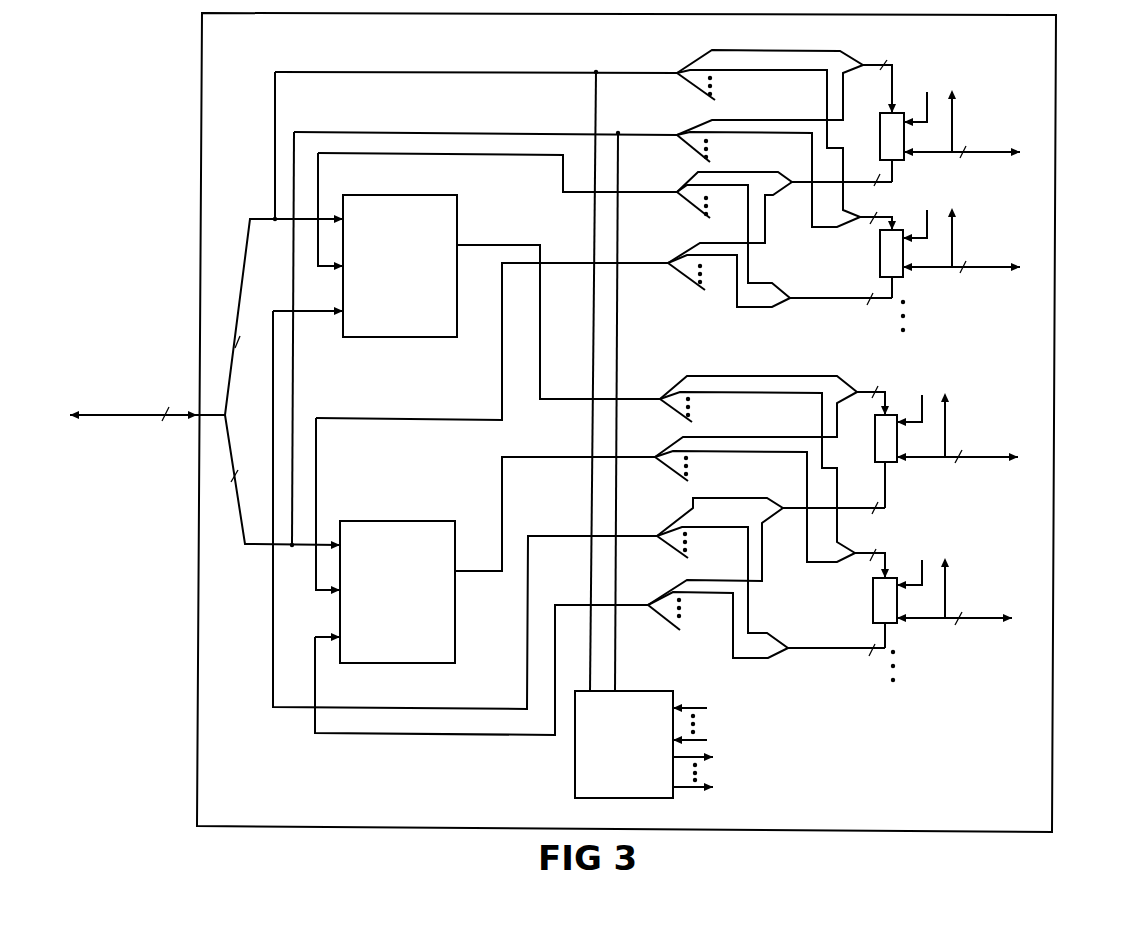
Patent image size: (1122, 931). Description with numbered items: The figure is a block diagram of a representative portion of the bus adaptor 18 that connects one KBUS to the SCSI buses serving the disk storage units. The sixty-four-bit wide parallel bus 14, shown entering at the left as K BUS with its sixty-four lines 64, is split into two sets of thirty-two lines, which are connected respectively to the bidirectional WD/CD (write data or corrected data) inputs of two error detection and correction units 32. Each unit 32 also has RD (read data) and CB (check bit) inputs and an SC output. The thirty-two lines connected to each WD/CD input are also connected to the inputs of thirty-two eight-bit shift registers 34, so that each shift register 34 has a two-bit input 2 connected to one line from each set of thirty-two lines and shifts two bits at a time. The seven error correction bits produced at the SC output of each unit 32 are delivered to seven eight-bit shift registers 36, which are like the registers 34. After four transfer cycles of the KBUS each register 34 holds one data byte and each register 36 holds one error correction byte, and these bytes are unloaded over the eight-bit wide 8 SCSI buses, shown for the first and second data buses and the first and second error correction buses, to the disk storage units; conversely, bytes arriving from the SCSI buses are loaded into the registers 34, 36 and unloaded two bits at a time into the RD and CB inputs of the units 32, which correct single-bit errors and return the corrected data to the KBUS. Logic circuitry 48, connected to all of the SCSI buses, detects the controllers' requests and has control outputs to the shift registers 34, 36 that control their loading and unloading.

The parallel bus (KBUS) 14 is at (82, 400).
The bus adaptor 18 is at (1052, 800).
The error detection and correction unit 32 is at (240, 336).
The eight-bit shift register 34 is at (880, 133).
The eight-bit shift register 36 is at (875, 442).
The logic circuitry 48 is at (625, 798).
The 64 lines of the KBUS 64 is at (163, 425).
The two-bit input 2 is at (879, 347).
The eight-bit width 8 is at (956, 394).